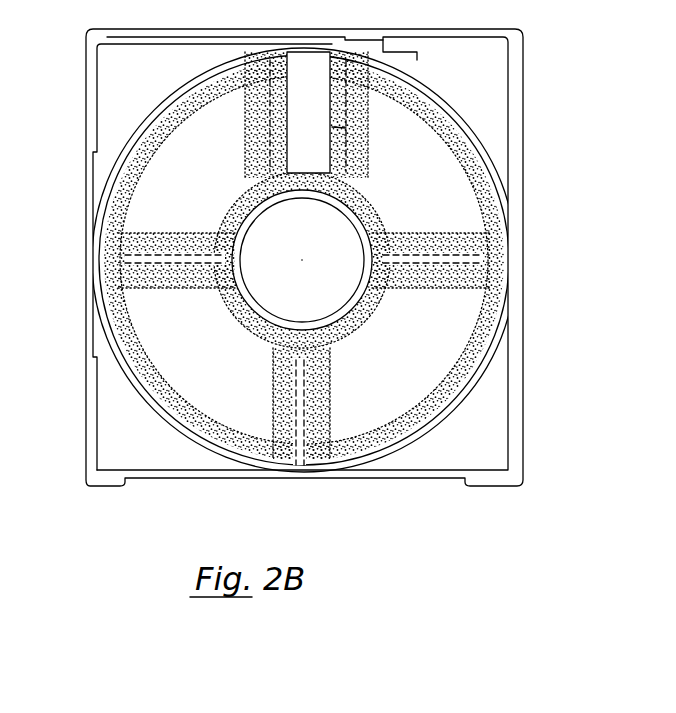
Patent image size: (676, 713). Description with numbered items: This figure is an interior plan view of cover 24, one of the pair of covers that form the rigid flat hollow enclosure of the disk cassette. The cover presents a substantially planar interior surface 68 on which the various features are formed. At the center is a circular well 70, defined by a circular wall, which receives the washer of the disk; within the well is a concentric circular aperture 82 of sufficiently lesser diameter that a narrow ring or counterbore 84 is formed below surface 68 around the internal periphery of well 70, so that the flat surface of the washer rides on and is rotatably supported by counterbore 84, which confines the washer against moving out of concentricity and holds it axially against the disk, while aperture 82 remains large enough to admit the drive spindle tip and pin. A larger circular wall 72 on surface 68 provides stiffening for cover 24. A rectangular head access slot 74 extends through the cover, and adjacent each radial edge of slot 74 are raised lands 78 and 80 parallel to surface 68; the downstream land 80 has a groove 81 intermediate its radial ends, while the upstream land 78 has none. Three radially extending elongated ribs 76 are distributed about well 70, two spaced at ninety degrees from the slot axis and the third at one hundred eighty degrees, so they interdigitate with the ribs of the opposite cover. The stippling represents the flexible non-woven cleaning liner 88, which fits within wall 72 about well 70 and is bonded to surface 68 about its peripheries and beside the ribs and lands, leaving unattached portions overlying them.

The interior surface 68 is at (483, 52).
The cover 24 is at (336, 253).
The circular wall 72 is at (457, 406).
The cleaning liner 88 is at (450, 347).
The central well 70 is at (262, 323).
The radially extending elongated ribs 76 is at (170, 226).
The head access slot 74 is at (293, 108).
The upstream land 78 is at (250, 153).
The downstream land 80 is at (358, 108).
The groove 81 is at (346, 128).
The counterbore 84 is at (252, 280).
The concentric circular aperture 82 is at (347, 275).